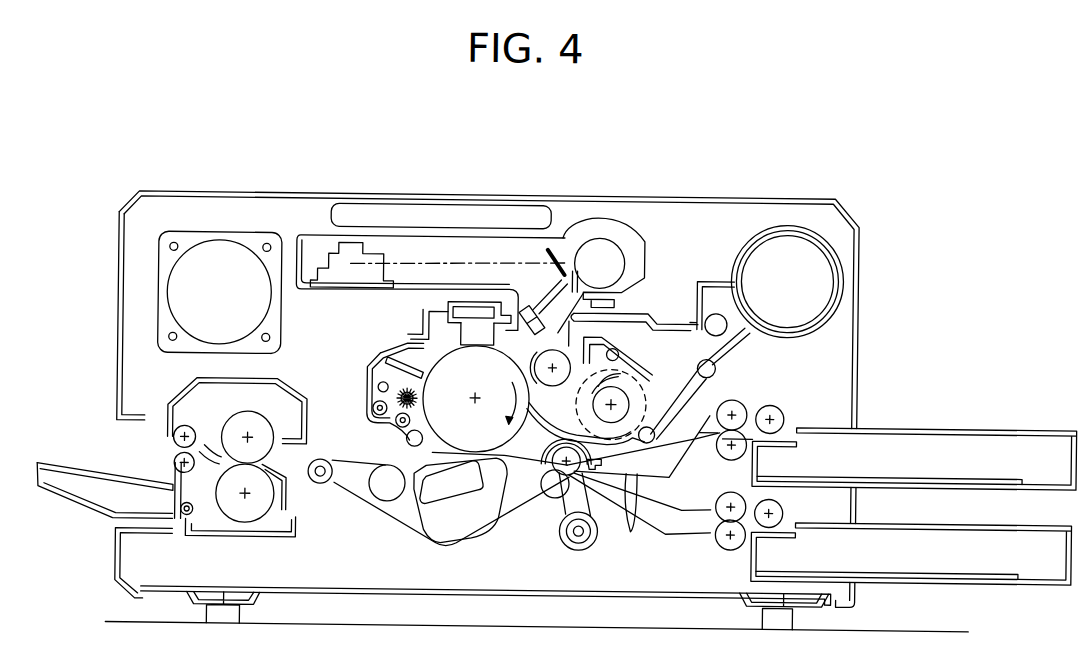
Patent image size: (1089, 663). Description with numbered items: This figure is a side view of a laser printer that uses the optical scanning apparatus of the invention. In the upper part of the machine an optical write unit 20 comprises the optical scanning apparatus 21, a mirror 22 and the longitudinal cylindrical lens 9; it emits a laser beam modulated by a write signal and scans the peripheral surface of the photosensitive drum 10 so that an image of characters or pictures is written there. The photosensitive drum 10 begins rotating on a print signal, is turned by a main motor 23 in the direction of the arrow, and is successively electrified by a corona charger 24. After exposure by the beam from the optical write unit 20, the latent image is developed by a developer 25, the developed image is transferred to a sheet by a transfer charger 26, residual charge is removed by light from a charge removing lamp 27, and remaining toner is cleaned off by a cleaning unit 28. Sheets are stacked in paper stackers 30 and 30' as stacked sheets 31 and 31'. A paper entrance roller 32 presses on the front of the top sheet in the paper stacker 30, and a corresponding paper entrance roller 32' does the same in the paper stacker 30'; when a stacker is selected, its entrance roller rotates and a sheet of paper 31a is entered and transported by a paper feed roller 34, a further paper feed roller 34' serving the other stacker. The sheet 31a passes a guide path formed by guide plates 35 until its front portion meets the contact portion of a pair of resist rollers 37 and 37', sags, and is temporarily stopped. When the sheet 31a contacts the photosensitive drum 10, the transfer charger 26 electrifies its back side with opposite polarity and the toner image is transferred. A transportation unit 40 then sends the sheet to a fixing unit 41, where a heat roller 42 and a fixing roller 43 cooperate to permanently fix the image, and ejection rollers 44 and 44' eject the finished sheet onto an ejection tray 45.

The longitudinal cylindrical lens 9 is at (522, 310).
The photosensitive drum 10 is at (442, 395).
The optical write unit 20 is at (561, 236).
The optical scanning apparatus 21 is at (347, 245).
The mirror 22 is at (572, 283).
The main motor 23 is at (223, 254).
The corona charger 24 is at (472, 306).
The developer 25 is at (649, 358).
The transfer charger 26 is at (500, 488).
The charge removing lamp 27 is at (408, 444).
The cleaning unit 28 is at (372, 342).
The paper stacker 30 is at (915, 421).
The paper stacker 30' is at (910, 583).
The stacked sheets 31 is at (889, 462).
The stacked sheets 31' is at (887, 559).
The sheet of paper 31a is at (770, 432).
The paper entrance roller 32 is at (798, 394).
The paper entrance roller 32' is at (794, 506).
The paper feed roller 34 is at (735, 408).
The paper feed roller 34' is at (708, 514).
The guide plates 35 is at (643, 483).
The resist roller 37 is at (565, 502).
The resist roller 37' is at (530, 517).
The transportation unit 40 is at (389, 503).
The fixing unit 41 is at (168, 393).
The heat roller 42 is at (262, 422).
The fixing roller 43 is at (249, 512).
The ejection roller 44 is at (202, 415).
The ejection roller 44' is at (150, 456).
The ejection tray 45 is at (88, 512).